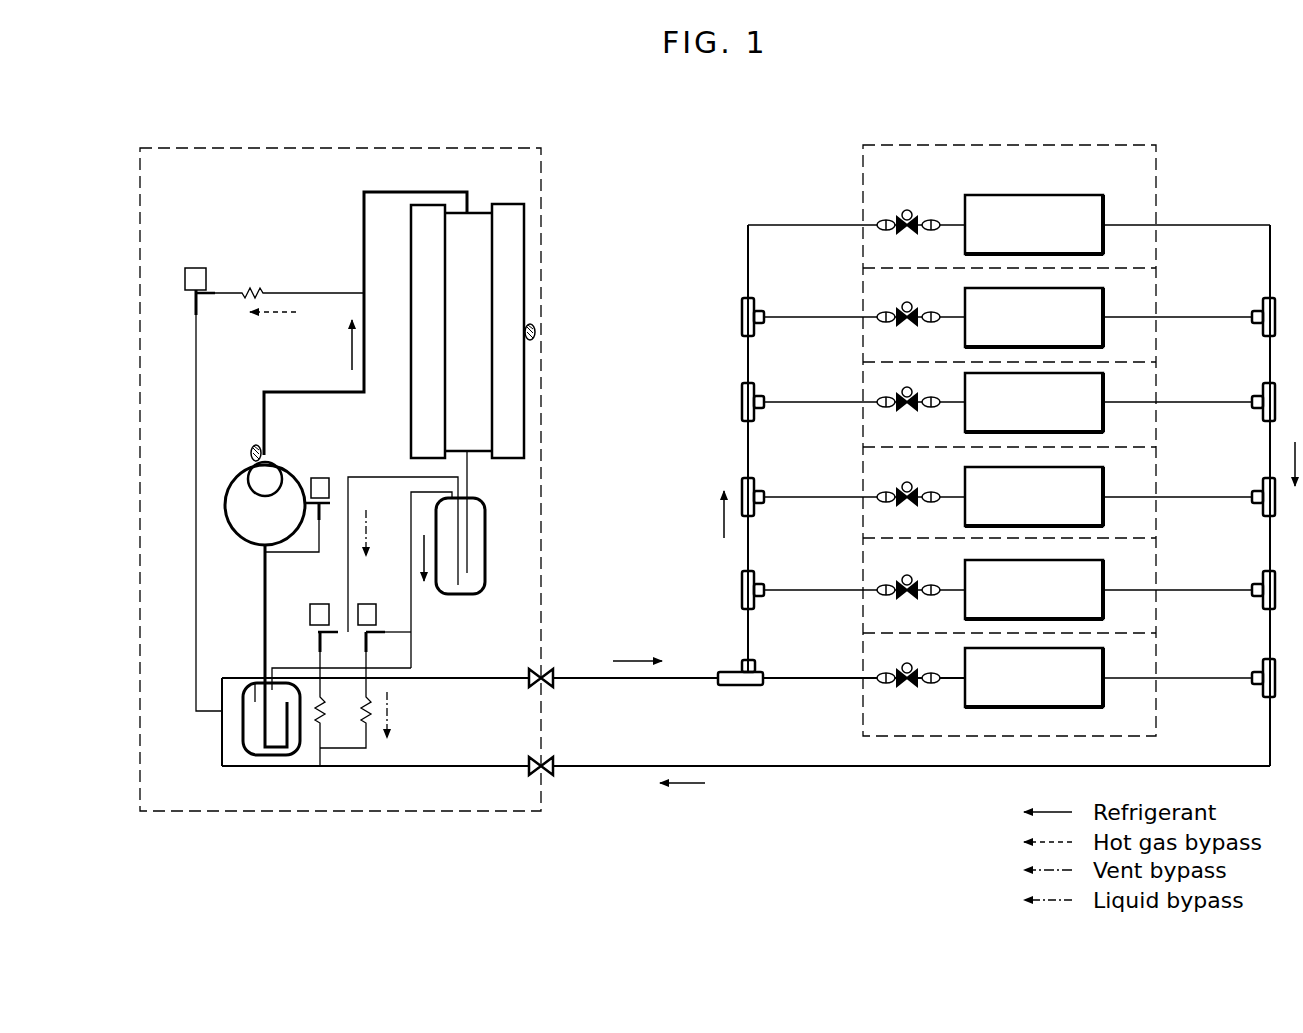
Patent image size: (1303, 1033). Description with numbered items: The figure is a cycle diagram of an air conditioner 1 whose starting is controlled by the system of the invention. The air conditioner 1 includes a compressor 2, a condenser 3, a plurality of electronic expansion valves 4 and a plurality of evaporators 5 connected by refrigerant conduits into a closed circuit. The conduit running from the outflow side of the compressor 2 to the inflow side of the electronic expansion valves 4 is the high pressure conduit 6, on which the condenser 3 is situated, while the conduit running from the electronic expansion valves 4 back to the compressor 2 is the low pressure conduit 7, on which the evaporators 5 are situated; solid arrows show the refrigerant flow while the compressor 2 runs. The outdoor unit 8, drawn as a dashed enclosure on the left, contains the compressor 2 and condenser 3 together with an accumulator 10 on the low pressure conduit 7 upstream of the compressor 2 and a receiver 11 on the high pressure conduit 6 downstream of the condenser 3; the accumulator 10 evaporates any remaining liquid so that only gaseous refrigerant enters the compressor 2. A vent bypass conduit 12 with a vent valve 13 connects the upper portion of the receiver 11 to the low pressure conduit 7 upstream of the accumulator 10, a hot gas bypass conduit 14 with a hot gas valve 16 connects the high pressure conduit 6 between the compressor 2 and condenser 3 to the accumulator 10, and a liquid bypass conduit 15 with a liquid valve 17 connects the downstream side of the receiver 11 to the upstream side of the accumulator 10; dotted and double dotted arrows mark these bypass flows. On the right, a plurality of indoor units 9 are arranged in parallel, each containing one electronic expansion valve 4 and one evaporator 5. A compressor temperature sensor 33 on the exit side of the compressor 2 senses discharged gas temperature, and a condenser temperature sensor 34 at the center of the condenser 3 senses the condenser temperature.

The air conditioner 1 is at (634, 167).
The compressor 2 is at (225, 503).
The condenser 3 is at (526, 257).
The electronic expansion valves 4 is at (900, 666).
The evaporators 5 is at (1162, 661).
The high pressure conduit 6 is at (428, 191).
The low pressure conduit 7 is at (432, 767).
The outdoor unit 8 is at (541, 188).
The indoor units 9 is at (892, 143).
The accumulator 10 is at (252, 757).
The receiver 11 is at (487, 546).
The vent bypass conduit 12 is at (348, 573).
The vent valve 13 is at (310, 614).
The hot gas bypass conduit 14 is at (195, 362).
The liquid bypass conduit 15 is at (400, 634).
The hot gas valve 16 is at (185, 278).
The liquid valve 17 is at (378, 607).
The compressor temperature sensor 33 is at (250, 453).
The condenser temperature sensor 34 is at (538, 333).